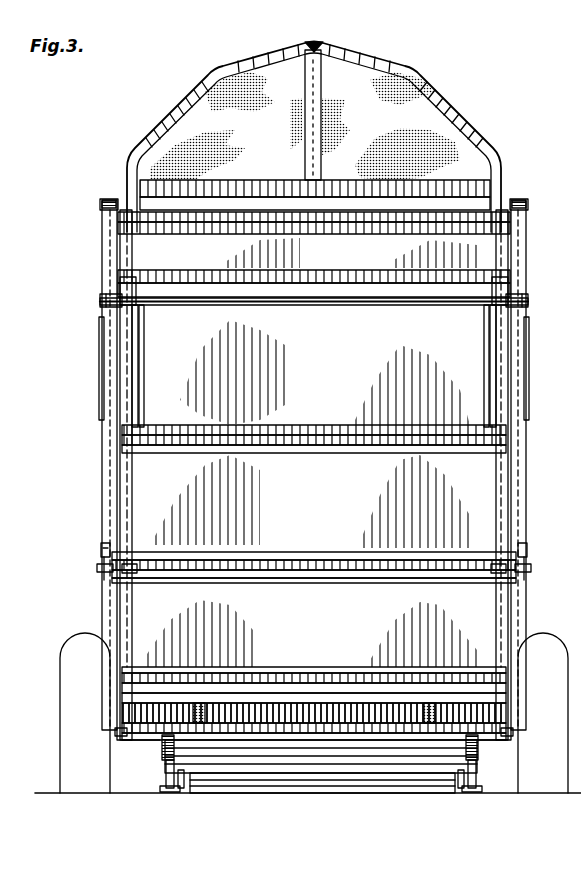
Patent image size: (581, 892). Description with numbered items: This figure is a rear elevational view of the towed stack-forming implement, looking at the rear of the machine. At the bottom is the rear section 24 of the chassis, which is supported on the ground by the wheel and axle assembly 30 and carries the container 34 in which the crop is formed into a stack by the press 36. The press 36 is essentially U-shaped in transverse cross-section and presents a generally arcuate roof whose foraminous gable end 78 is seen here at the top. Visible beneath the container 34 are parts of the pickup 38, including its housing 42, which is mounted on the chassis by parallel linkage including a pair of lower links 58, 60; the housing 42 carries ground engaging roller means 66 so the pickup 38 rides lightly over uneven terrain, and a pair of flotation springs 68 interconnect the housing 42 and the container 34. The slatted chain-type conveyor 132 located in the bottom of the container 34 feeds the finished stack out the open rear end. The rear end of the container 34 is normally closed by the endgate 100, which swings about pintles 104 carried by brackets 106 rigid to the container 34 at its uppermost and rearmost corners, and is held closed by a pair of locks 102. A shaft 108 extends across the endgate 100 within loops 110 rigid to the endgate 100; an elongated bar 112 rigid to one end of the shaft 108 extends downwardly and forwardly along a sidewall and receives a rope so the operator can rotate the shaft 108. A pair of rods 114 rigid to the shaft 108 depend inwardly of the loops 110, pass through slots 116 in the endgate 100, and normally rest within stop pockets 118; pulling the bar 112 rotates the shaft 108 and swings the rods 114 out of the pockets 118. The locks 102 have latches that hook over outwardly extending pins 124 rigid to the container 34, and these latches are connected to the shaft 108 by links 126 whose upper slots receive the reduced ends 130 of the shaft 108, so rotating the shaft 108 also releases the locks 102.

The rear section 24 is at (128, 736).
The wheel and axle assembly 30 is at (60, 730).
The container 34 is at (108, 612).
The press 36 is at (442, 99).
The pickup 38 is at (480, 788).
The housing 42 is at (315, 770).
The lower link 58 is at (168, 776).
The lower link 60 is at (478, 772).
The ground engaging roller means 66 is at (245, 780).
The flotation spring 68 is at (176, 752).
The gable end 78 is at (188, 115).
The endgate 100 is at (314, 470).
The lock 102 is at (100, 557).
The pintle 104 is at (103, 202).
The bracket 106 is at (110, 248).
The shaft 108 is at (318, 306).
The loop 110 is at (128, 290).
The elongated bar 112 is at (100, 405).
The rod 114 is at (138, 340).
The slot 116 is at (142, 412).
The stop pocket 118 is at (135, 452).
The pin 124 is at (100, 571).
The link 126 is at (103, 463).
The reduced end 130 is at (103, 300).
The conveyor 132 is at (287, 700).